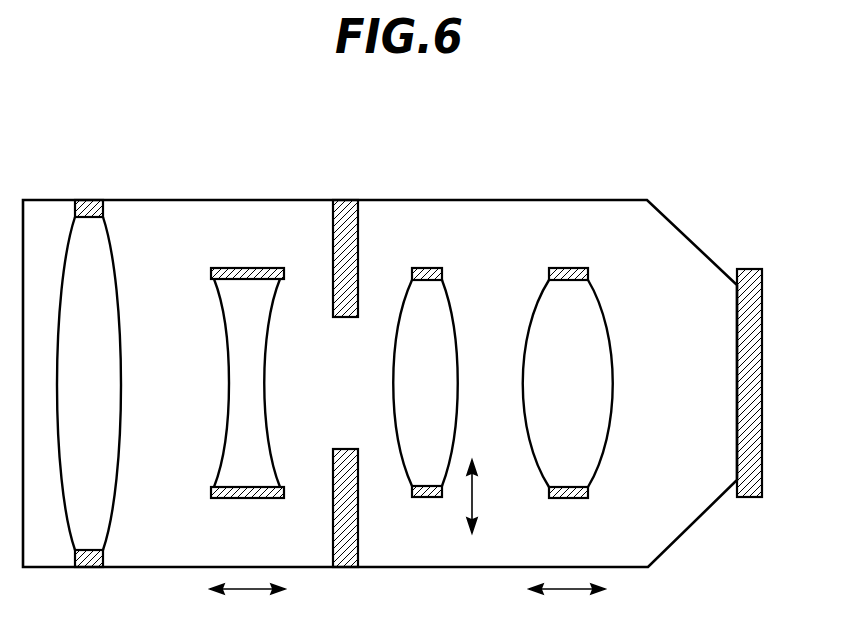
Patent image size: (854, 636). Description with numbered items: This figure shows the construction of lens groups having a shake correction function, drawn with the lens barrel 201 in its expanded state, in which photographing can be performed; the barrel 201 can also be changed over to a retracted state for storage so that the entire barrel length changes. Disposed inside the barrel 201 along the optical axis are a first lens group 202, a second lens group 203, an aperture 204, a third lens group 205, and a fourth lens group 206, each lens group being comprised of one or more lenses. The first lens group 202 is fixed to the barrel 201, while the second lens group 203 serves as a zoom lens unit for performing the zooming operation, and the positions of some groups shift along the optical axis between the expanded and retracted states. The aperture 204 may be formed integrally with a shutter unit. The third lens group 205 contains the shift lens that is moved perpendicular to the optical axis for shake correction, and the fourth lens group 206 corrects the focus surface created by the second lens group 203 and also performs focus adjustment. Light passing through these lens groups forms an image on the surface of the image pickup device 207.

The lens barrel 201 is at (495, 200).
The first lens group 202 is at (119, 270).
The second lens group 203 is at (223, 460).
The aperture 204 is at (333, 233).
The third lens group 205 is at (454, 295).
The fourth lens group 206 is at (603, 290).
The image pickup device 207 is at (749, 268).